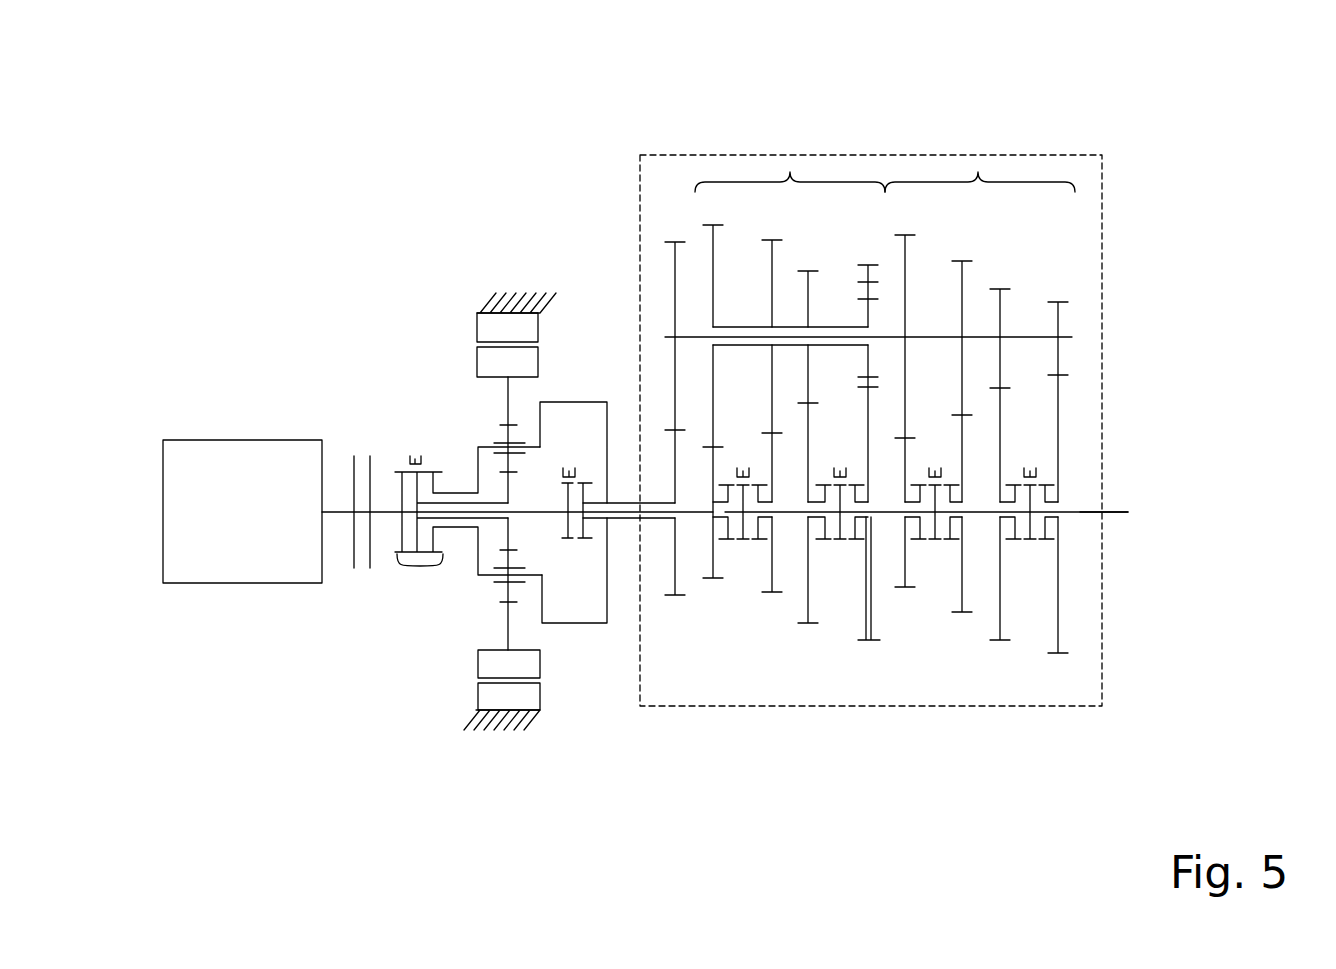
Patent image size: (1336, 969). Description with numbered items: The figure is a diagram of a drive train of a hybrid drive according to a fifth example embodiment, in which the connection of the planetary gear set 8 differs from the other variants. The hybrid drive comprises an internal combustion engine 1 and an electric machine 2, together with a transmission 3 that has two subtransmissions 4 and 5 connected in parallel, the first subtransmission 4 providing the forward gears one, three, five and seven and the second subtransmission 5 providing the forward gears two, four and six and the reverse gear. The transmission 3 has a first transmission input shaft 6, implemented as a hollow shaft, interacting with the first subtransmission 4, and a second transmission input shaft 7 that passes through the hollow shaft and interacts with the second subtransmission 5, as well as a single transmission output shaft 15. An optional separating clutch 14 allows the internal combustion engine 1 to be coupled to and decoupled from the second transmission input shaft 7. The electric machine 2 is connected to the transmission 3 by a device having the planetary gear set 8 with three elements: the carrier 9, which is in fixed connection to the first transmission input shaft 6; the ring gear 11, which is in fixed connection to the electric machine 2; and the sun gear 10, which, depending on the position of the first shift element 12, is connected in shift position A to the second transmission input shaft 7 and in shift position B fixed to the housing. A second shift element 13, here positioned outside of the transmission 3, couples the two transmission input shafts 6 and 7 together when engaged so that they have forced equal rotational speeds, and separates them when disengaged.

The internal combustion engine 1 is at (260, 472).
The electric machine 2 is at (507, 287).
The transmission 3 is at (1064, 147).
The first subtransmission 4 is at (979, 172).
The second subtransmission 5 is at (790, 172).
The first transmission input shaft 6 is at (626, 522).
The second transmission input shaft 7 is at (693, 518).
The planetary gear set 8 is at (483, 422).
The carrier 9 is at (580, 400).
The sun gear 10 is at (508, 490).
The ring gear 11 is at (505, 612).
The first shift element 12 is at (420, 568).
The second shift element 13 is at (578, 540).
The separating clutch 14 is at (358, 575).
The transmission output shaft 15 is at (1088, 515).